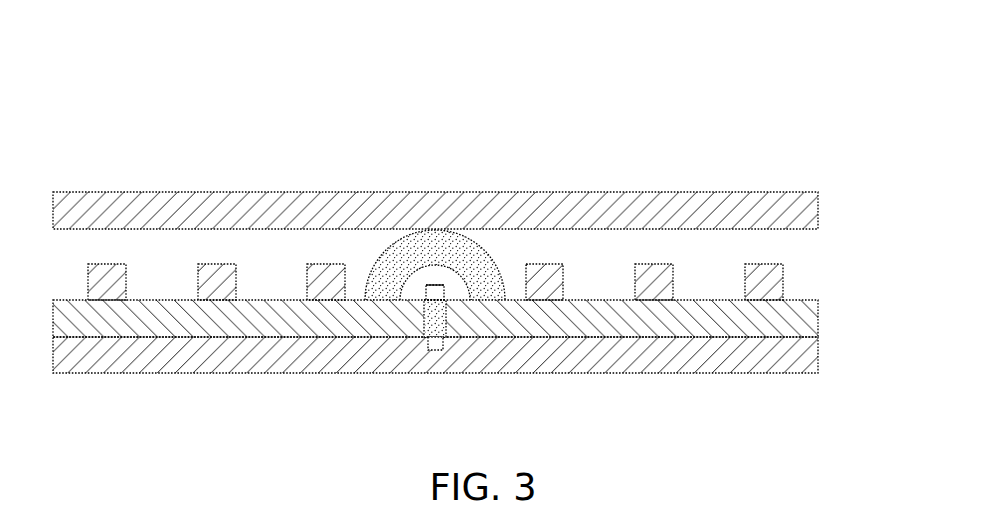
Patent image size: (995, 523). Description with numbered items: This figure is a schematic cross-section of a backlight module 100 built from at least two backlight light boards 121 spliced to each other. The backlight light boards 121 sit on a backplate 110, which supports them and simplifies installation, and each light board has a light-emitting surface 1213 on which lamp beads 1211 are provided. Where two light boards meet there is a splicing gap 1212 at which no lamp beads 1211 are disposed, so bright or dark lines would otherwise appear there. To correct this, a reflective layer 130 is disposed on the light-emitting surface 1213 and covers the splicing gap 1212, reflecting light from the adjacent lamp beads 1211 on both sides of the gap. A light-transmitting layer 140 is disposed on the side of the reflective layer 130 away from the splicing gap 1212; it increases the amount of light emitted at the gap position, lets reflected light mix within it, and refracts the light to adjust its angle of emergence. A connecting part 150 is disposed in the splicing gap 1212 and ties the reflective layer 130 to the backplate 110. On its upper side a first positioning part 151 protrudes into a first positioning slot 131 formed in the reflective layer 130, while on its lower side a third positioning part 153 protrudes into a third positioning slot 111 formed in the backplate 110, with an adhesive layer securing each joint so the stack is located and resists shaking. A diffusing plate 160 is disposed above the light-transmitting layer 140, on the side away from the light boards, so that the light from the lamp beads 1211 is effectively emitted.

The backlight module 100 is at (417, 84).
The backplate 110 is at (790, 362).
The third positioning slot 111 is at (453, 355).
The backlight light board 121 is at (220, 318).
The lamp bead 1211 is at (761, 281).
The splicing gap 1212 is at (455, 326).
The light-emitting surface 1213 is at (797, 302).
The reflective layer 130 is at (415, 280).
The first positioning slot 131 is at (450, 282).
The light-transmitting layer 140 is at (383, 276).
The connecting part 150 is at (431, 303).
The first positioning part 151 is at (437, 287).
The third positioning part 153 is at (435, 328).
The diffusing plate 160 is at (789, 211).